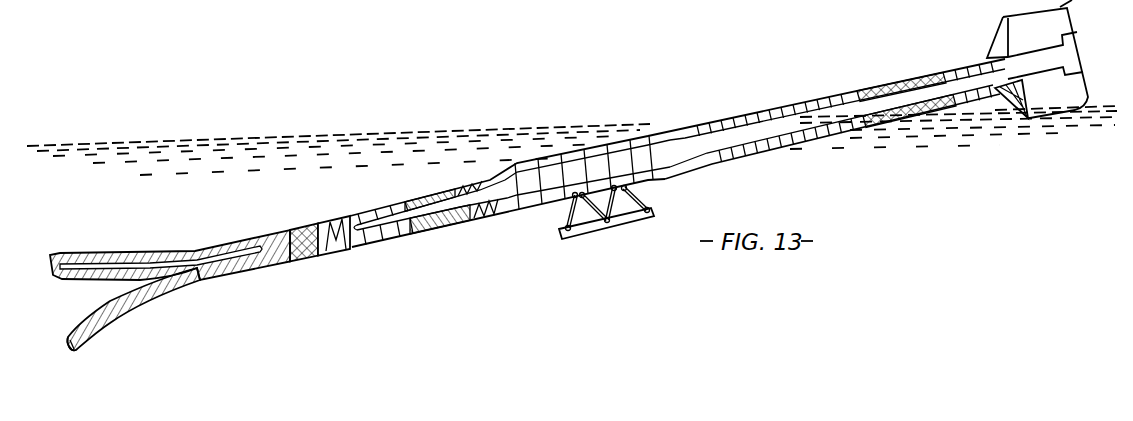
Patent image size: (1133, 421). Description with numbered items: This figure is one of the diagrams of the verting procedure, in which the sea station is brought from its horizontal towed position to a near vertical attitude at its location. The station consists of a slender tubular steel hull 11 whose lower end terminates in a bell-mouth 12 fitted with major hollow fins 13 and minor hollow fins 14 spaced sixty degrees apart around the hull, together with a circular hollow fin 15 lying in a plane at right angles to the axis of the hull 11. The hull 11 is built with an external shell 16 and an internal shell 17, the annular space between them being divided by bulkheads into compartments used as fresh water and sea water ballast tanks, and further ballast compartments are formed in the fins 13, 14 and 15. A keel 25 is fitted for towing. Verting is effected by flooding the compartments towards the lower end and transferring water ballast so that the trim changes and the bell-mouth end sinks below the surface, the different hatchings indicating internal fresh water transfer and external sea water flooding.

The tubular steel column or hull 11 is at (377, 207).
The bell-mouth 12 is at (156, 304).
The major hollow fins 13 is at (100, 261).
The minor hollow fins 14 is at (85, 336).
The circular hollow fin 15 is at (66, 342).
The external shell 16 is at (762, 106).
The internal shell 17 is at (788, 118).
The keel 25 is at (624, 233).